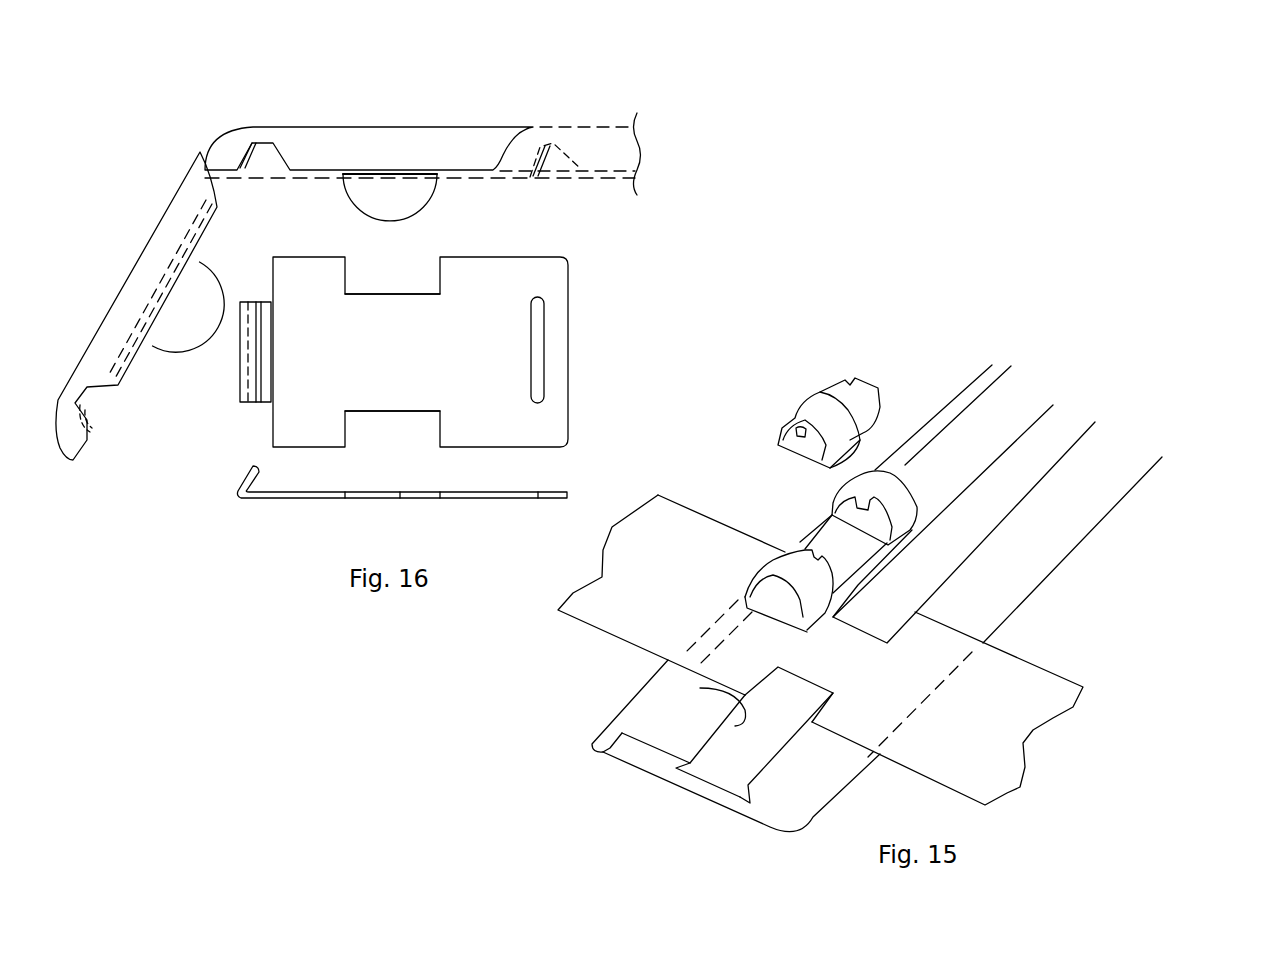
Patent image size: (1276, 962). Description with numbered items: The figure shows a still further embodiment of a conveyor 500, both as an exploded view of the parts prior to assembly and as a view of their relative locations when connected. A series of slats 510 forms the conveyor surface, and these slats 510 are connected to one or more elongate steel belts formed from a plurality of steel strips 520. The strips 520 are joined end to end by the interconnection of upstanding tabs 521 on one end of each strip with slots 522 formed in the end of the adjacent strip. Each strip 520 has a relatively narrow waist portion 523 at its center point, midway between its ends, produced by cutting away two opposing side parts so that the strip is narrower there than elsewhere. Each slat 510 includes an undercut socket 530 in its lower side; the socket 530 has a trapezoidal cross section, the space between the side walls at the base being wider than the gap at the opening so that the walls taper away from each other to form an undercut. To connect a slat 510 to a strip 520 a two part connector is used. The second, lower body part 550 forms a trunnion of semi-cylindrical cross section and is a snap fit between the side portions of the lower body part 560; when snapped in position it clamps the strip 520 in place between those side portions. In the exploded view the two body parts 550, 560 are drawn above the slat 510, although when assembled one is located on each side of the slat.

In FIG. 16, the conveyor 500 is at (458, 205).
In FIG. 16, the slat 510 is at (378, 128).
In FIG. 15, the slat 510 is at (637, 711).
In FIG. 16, the steel strip 520 is at (272, 425).
In FIG. 16, the upstanding tab 521 is at (252, 300).
In FIG. 16, the slot 522 is at (541, 348).
In FIG. 16, the waist portion 523 is at (392, 412).
In FIG. 15, the waist portion 523 is at (845, 620).
In FIG. 15, the undercut socket 530 is at (700, 688).
In FIG. 15, the second lower body part 550 is at (805, 416).
In FIG. 15, the lower body part 560 is at (793, 560).